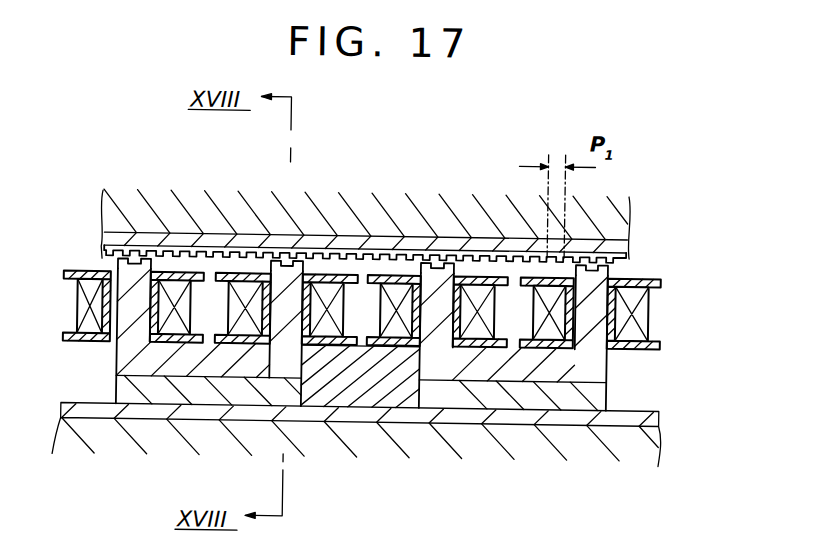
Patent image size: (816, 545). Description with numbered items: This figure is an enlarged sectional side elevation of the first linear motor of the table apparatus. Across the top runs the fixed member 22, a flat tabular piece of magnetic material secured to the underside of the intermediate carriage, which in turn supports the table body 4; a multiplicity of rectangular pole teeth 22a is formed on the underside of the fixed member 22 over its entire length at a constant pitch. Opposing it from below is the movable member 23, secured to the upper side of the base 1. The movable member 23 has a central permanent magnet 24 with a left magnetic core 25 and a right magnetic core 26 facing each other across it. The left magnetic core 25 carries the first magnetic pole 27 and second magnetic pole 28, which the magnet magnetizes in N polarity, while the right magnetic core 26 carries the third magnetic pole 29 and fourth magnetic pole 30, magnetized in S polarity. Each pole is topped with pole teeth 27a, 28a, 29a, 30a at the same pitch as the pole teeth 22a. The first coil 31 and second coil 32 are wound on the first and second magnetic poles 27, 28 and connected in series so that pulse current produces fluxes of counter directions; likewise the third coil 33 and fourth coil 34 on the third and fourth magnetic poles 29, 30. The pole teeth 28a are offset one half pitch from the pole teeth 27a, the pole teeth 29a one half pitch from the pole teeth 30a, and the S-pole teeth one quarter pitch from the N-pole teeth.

The base 1 is at (655, 437).
The table body 4 is at (620, 208).
The fixed member 22 is at (606, 254).
The pole teeth 22a is at (202, 254).
The movable member 23 is at (671, 292).
The central permanent magnet 24 is at (362, 390).
The left magnetic core 25 is at (191, 385).
The right magnetic core 26 is at (525, 386).
The first magnetic pole 27 is at (93, 280).
The pole teeth 27a is at (125, 265).
The second magnetic pole 28 is at (274, 282).
The pole teeth 28a is at (286, 263).
The third magnetic pole 29 is at (414, 283).
The pole teeth 29a is at (432, 262).
The fourth magnetic pole 30 is at (643, 287).
The pole teeth 30a is at (597, 260).
The first coil 31 is at (190, 315).
The second coil 32 is at (347, 322).
The third coil 33 is at (496, 316).
The fourth coil 34 is at (650, 324).